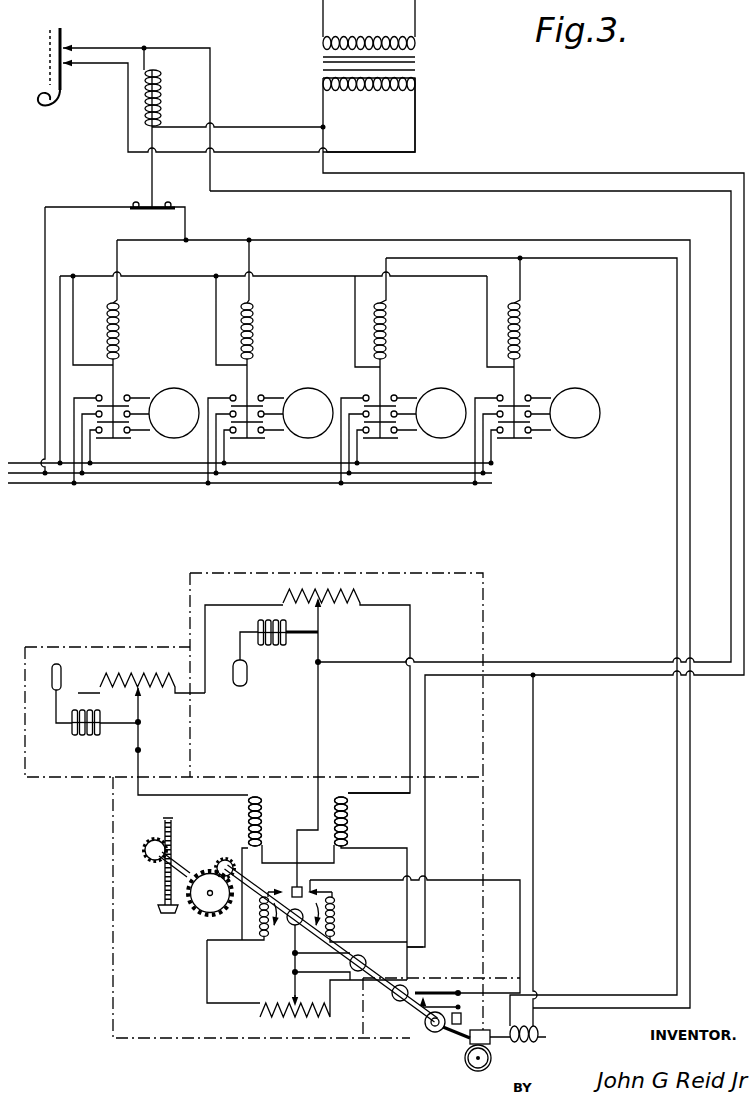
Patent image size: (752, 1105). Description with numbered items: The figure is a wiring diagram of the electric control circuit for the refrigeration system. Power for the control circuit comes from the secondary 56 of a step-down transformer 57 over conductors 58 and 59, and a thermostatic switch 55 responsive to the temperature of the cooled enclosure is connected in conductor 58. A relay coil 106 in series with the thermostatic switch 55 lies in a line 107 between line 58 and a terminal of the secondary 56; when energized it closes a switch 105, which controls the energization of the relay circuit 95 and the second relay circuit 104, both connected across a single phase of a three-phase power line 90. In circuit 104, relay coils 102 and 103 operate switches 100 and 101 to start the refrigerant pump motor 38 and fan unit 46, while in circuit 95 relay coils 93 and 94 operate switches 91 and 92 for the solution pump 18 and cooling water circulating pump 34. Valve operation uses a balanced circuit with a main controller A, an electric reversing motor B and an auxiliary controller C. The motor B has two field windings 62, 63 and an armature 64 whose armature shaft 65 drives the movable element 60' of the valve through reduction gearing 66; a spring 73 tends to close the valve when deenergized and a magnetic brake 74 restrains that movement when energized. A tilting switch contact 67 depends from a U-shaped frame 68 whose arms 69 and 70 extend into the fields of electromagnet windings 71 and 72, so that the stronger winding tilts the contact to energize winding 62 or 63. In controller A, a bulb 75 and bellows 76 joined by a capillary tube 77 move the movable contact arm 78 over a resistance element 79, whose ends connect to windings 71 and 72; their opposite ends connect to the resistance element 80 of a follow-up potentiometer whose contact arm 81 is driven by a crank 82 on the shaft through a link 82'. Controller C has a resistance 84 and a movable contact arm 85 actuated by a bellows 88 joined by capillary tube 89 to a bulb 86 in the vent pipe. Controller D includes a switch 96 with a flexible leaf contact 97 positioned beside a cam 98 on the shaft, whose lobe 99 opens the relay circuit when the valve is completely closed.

The thermostatic switch 55 is at (63, 36).
The transformer secondary 56 is at (417, 88).
The step-down transformer 57 is at (422, 62).
The conductor 58 is at (447, 193).
The conductor 59 is at (493, 176).
The relay coil 106 is at (163, 88).
The line 107 is at (235, 127).
The switch 105 is at (163, 201).
The second relay circuit 104 is at (232, 240).
The relay circuit 95 is at (641, 262).
The three-phase power line 90 is at (12, 462).
The relay coil 102 is at (118, 335).
The relay coil 103 is at (253, 326).
The relay coil 93 is at (387, 330).
The relay coil 94 is at (520, 328).
The switch 100 is at (117, 393).
The switch 101 is at (252, 395).
The switch 91 is at (387, 395).
The switch 92 is at (520, 395).
The refrigerant pump motor 38 is at (177, 381).
The fan unit 46 is at (323, 381).
The solution pump 18 is at (447, 389).
The cooling water circulating pump 34 is at (590, 391).
The main controller A is at (485, 629).
The electric reversing motor B is at (485, 851).
The auxiliary controller C is at (82, 648).
The controller D is at (412, 1042).
The resistance element 79 is at (349, 588).
The movable contact arm 78 is at (323, 626).
The capillary tube 77 is at (240, 648).
The bellows 76 is at (276, 647).
The bulb 75 is at (246, 686).
The bulb 86 is at (61, 667).
The capillary tube 89 is at (62, 728).
The bellows 88 is at (82, 737).
The resistance 84 is at (141, 672).
The movable contact arm 85 is at (140, 712).
The arm 69 is at (275, 814).
The arm 70 is at (348, 795).
The electromagnet winding 71 is at (249, 821).
The electromagnet winding 72 is at (350, 827).
The U-shaped frame 68 is at (292, 858).
The tilting switch contact 67 is at (292, 874).
The field winding 62 is at (257, 941).
The field winding 63 is at (337, 908).
The armature 64 is at (290, 927).
The armature shaft 65 is at (348, 950).
The reduction gearing 66 is at (212, 865).
The movable element 60' is at (161, 883).
The resistance element 80 is at (292, 1019).
The movable contact arm 81 is at (291, 985).
The link 82' is at (322, 990).
The crank 82 is at (377, 965).
The cam 98 is at (387, 1000).
The lobe 99 is at (398, 1002).
The flexible leaf contact 97 is at (436, 990).
The switch 96 is at (463, 990).
The spring 73 is at (436, 1034).
The magnetic brake 74 is at (472, 1071).